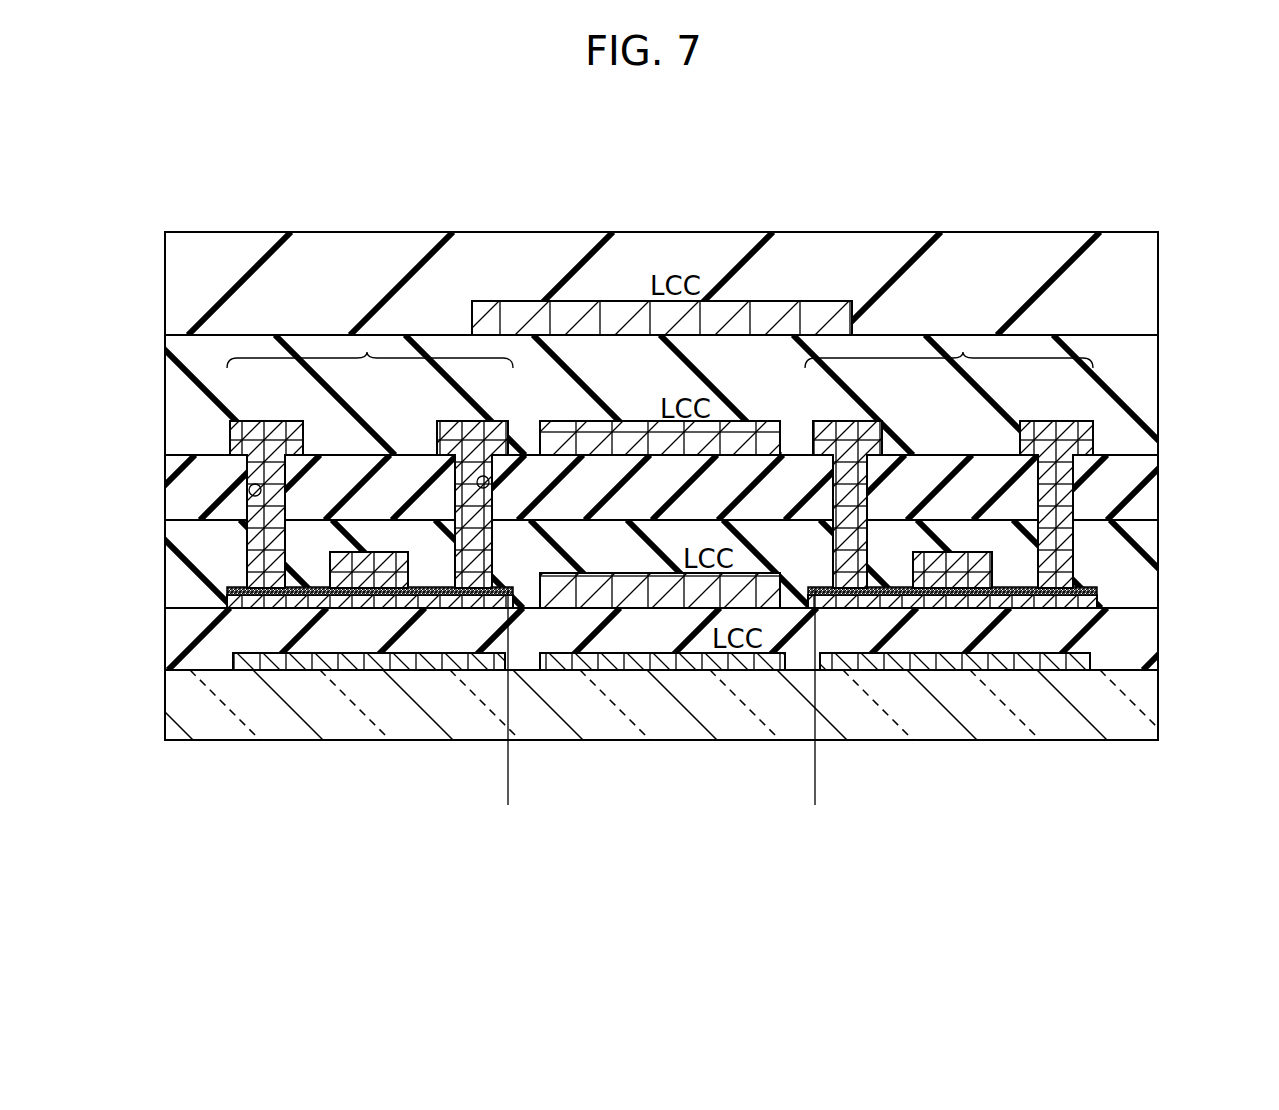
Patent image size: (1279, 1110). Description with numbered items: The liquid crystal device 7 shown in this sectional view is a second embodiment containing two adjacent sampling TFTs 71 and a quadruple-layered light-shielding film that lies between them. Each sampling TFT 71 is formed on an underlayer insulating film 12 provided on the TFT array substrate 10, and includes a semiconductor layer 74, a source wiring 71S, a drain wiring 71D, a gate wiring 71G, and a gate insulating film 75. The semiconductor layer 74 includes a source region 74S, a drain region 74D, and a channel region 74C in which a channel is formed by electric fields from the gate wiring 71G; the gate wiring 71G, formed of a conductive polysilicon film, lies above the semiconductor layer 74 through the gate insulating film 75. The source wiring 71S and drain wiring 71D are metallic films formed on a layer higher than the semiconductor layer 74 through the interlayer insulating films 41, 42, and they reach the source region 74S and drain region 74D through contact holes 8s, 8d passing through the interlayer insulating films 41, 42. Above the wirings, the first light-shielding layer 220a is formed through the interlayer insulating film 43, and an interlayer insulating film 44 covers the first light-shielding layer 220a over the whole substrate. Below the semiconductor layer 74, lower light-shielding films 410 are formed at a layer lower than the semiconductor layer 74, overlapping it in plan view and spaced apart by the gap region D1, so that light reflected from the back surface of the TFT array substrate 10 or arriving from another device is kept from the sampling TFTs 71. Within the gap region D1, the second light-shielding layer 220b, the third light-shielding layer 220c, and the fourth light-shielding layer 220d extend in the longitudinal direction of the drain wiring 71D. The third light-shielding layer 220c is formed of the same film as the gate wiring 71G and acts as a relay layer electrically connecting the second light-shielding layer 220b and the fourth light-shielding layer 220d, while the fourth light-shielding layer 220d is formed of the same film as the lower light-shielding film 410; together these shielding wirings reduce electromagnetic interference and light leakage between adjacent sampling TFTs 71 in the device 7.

The electro-optical device 7 is at (438, 195).
The sampling TFT 71 is at (367, 352).
The source wiring 71S is at (280, 421).
The drain wiring 71D is at (465, 421).
The gate wiring 71G is at (373, 550).
The semiconductor layer 74 is at (275, 618).
The source region 74S is at (313, 610).
The channel region 74C is at (380, 610).
The drain region 74D is at (450, 610).
The gate insulating film 75 is at (499, 587).
The contact hole 8s is at (249, 491).
The contact hole 8d is at (489, 483).
The TFT array substrate 10 is at (1130, 705).
The underlayer insulating film 12 is at (1143, 635).
The interlayer insulating film 41 is at (1140, 573).
The interlayer insulating film 42 is at (1143, 487).
The interlayer insulating film 43 is at (1140, 393).
The interlayer insulating film 44 is at (1142, 283).
The first light-shielding layer 220a is at (640, 318).
The second light-shielding layer 220b is at (642, 425).
The third light-shielding layer 220c is at (655, 586).
The fourth light-shielding layer 220d is at (642, 663).
The lower light-shielding film 410 is at (243, 664).
The gap region D1 is at (815, 795).